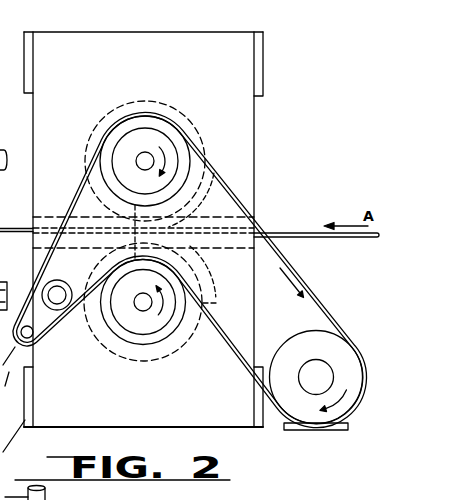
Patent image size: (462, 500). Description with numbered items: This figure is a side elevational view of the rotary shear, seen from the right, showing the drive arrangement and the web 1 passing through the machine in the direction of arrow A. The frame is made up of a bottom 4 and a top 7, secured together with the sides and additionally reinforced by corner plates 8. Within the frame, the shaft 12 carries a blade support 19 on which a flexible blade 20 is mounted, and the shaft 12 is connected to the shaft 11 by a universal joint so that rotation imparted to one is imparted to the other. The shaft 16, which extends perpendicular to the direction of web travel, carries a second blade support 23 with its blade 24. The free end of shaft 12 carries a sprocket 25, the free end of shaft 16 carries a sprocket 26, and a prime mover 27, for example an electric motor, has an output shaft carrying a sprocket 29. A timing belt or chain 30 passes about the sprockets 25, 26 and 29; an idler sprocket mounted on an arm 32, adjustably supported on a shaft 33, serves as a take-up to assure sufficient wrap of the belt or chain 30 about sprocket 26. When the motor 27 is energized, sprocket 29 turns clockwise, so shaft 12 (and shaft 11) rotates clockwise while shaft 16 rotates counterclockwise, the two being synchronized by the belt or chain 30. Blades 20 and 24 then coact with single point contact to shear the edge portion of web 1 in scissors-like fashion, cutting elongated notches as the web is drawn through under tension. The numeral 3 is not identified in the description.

The web 1 is at (378, 238).
The housing side wall 3 is at (254, 133).
The bottom 4 is at (185, 430).
The top 7 is at (222, 32).
The corner plates 8 is at (263, 70).
The shaft 11 is at (45, 493).
The shaft 12 is at (152, 155).
The shaft 16 is at (143, 308).
The blade support 19 is at (103, 113).
The flexible blade 20 is at (233, 192).
The second blade support 23 is at (138, 362).
The blade 24 is at (216, 297).
The sprocket 25 is at (131, 134).
The sprocket 26 is at (158, 337).
The prime mover 27 is at (348, 432).
The sprocket 29 is at (355, 386).
The timing belt or chain 30 is at (331, 313).
The arm 32 is at (42, 327).
The shaft 33 is at (62, 282).